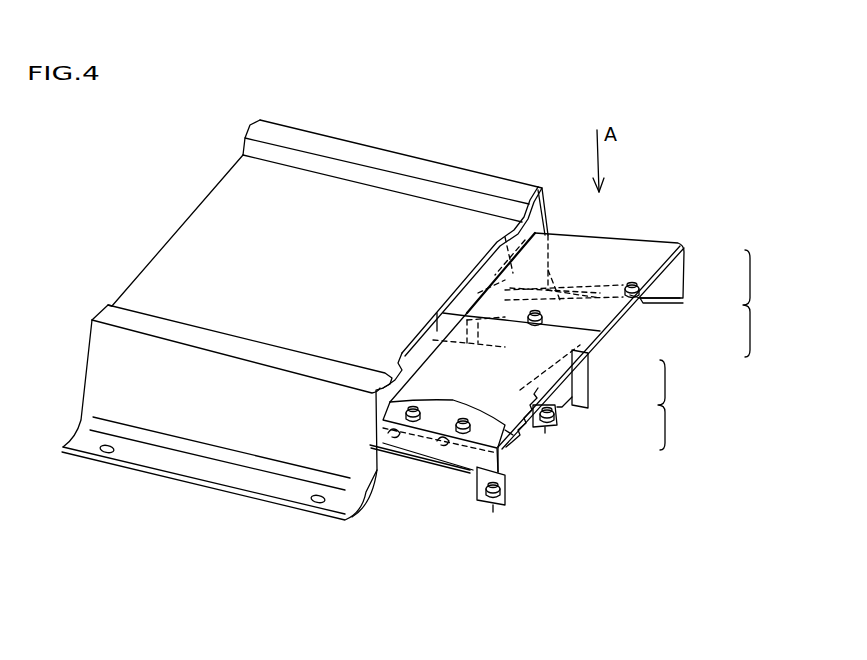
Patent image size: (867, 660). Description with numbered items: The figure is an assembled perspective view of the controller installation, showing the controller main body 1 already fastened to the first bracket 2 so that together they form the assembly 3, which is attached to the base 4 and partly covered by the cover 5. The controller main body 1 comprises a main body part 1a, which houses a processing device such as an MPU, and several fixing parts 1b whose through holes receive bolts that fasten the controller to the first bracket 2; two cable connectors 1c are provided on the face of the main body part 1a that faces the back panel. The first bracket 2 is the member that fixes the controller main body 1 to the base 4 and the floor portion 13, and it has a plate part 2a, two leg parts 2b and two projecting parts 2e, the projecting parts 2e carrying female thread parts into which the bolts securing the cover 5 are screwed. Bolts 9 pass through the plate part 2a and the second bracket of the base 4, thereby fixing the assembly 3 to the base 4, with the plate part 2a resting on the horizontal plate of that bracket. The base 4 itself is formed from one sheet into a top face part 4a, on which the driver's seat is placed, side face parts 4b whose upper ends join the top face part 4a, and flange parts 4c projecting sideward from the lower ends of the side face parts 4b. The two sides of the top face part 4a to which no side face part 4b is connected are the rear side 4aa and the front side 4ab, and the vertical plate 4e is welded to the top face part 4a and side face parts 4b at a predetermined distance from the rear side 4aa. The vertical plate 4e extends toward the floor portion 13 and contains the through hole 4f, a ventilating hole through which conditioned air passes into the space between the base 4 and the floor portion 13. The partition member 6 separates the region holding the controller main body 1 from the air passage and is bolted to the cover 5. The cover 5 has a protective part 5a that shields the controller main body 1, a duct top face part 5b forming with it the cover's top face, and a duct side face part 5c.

The controller main body 1 is at (527, 311).
The main body part 1a is at (413, 322).
The fixing parts 1b is at (427, 440).
The cable connectors 1c is at (513, 435).
The first bracket 2 is at (525, 477).
The plate part 2a is at (507, 462).
The leg parts 2b is at (497, 498).
The projecting parts 2e is at (418, 453).
The assembly 3 is at (672, 405).
The base 4 is at (289, 325).
The top face part 4a is at (185, 267).
The one side 4aa is at (470, 265).
The other side 4ab is at (187, 220).
The side face parts 4b is at (125, 375).
The flange parts 4c is at (225, 475).
The vertical plate 4e is at (437, 330).
The through hole 4f is at (507, 277).
The cover 5 is at (648, 297).
The protective part 5a is at (553, 357).
The duct top face part 5b is at (638, 257).
The duct side face part 5c is at (672, 283).
The partition member 6 is at (577, 397).
The bolts 9 is at (380, 447).
The floor portion 13 is at (375, 537).